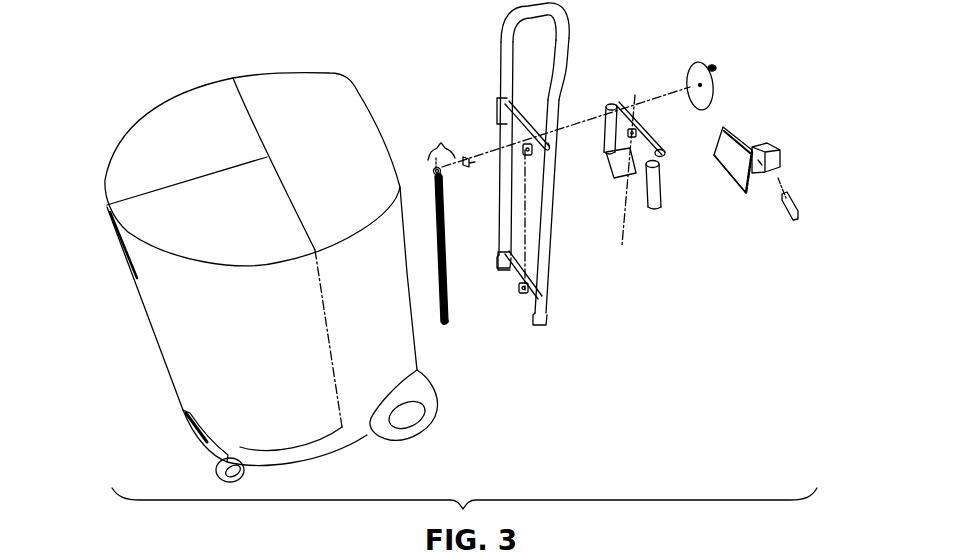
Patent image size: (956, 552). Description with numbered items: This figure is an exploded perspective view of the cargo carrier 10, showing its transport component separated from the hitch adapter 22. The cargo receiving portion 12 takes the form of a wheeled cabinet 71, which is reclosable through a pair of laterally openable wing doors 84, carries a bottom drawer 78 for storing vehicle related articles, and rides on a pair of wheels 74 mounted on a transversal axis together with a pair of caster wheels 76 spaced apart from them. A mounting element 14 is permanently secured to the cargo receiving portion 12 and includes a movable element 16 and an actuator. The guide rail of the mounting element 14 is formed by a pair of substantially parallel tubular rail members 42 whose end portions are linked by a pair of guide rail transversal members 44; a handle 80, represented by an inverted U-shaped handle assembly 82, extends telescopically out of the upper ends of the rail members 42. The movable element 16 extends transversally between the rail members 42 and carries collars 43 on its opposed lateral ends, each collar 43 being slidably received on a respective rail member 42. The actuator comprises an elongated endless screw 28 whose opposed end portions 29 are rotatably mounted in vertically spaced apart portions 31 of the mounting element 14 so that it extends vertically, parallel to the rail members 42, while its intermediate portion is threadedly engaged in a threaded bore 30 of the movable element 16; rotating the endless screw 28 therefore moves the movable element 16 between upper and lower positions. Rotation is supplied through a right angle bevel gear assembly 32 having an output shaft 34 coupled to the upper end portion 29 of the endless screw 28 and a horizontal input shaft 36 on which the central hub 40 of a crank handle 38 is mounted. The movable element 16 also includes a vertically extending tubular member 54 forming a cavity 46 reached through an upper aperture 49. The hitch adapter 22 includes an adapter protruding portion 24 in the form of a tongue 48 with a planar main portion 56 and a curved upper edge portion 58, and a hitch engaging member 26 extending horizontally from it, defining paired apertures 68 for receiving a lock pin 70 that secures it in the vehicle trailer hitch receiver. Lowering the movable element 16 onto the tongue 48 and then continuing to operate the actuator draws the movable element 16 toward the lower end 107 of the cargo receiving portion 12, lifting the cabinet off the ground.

The cargo carrier 10 is at (464, 509).
The cargo receiving portion 12 is at (353, 90).
The mounting element 14 is at (554, 252).
The movable element 16 is at (659, 206).
The hitch adapter 22 is at (737, 229).
The adapter protruding portion 24 is at (735, 180).
The hitch engaging member 26 is at (771, 148).
The endless screw 28 is at (440, 265).
The end portions 29 is at (435, 181).
The threaded bore 30 is at (628, 134).
The vertically spaced apart portions 31 is at (536, 162).
The right angle bevel gear assembly 32 is at (438, 141).
The bevel gear assembly output shaft 34 is at (433, 170).
The bevel gear assembly input shaft 36 is at (465, 156).
The crank handle 38 is at (697, 62).
The central hub 40 is at (698, 84).
The rail members 42 is at (500, 200).
The collars 43 is at (608, 122).
The guide rail transversal members 44 is at (513, 113).
The cavity 46 is at (640, 178).
The tongue 48 is at (724, 167).
The upper aperture 49 is at (645, 132).
The tubular member 54 is at (661, 150).
The main portion 56 is at (737, 184).
The curved upper edge portion 58 is at (734, 136).
The apertures 68 is at (758, 164).
The lock pin 70 is at (798, 219).
The wheeled cabinet 71 is at (255, 72).
The wheels 74 is at (428, 428).
The caster wheels 76 is at (226, 483).
The bottom drawer 78 is at (200, 437).
The handle 80 is at (565, 33).
The handle assembly 82 is at (568, 68).
The wing doors 84 is at (228, 100).
The lower end 107 is at (363, 440).